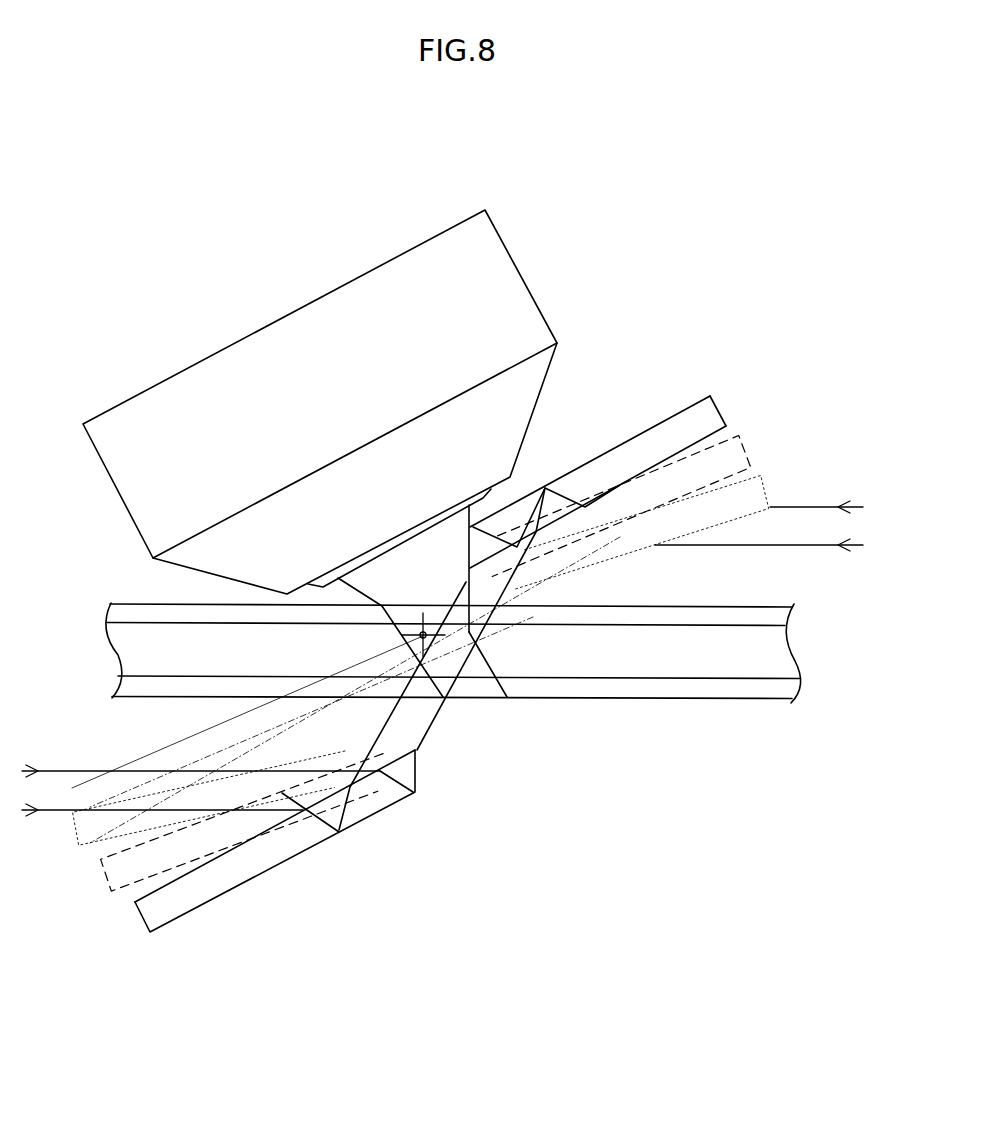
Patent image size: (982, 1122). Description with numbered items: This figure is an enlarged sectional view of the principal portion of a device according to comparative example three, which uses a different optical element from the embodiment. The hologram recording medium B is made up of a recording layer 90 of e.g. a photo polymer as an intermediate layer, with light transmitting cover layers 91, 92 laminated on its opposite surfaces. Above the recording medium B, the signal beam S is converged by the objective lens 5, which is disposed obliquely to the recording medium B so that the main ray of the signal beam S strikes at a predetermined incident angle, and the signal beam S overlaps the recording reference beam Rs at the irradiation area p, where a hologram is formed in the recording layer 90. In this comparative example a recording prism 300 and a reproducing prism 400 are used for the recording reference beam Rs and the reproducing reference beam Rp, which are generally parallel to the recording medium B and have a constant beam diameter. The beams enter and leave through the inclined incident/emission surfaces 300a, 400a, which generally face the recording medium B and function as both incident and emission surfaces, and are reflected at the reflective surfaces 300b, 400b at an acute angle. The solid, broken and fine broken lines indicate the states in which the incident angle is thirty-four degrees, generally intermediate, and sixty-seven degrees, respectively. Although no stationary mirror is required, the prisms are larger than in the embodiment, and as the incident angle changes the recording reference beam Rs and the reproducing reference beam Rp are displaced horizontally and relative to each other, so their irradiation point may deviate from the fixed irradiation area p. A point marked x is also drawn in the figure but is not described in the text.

The objective lens 5 is at (528, 283).
The signal beam S is at (340, 387).
The recording layer 90 is at (476, 656).
The cover layer 91 is at (778, 619).
The cover layer 92 is at (792, 690).
The recording prism 300 is at (557, 580).
The incident/emission surface 300a is at (653, 470).
The reflective surface 300b is at (573, 466).
The reproducing prism 400 is at (239, 844).
The incident/emission surface 400a is at (185, 863).
The reflective surface 400b is at (280, 854).
The recording reference beam Rs is at (773, 507).
The reproducing reference beam Rp is at (90, 767).
The pinhole / reference point x is at (418, 639).
The recording medium B is at (672, 722).
The irradiation area p is at (495, 657).